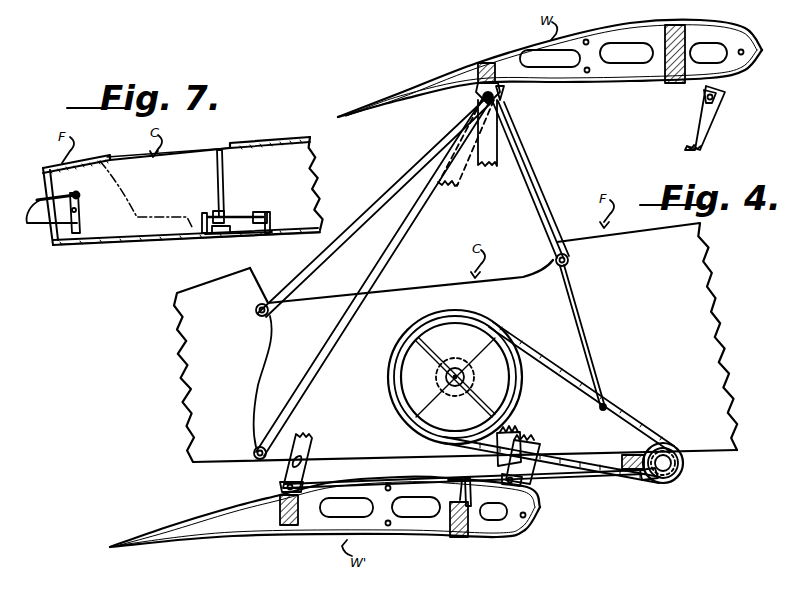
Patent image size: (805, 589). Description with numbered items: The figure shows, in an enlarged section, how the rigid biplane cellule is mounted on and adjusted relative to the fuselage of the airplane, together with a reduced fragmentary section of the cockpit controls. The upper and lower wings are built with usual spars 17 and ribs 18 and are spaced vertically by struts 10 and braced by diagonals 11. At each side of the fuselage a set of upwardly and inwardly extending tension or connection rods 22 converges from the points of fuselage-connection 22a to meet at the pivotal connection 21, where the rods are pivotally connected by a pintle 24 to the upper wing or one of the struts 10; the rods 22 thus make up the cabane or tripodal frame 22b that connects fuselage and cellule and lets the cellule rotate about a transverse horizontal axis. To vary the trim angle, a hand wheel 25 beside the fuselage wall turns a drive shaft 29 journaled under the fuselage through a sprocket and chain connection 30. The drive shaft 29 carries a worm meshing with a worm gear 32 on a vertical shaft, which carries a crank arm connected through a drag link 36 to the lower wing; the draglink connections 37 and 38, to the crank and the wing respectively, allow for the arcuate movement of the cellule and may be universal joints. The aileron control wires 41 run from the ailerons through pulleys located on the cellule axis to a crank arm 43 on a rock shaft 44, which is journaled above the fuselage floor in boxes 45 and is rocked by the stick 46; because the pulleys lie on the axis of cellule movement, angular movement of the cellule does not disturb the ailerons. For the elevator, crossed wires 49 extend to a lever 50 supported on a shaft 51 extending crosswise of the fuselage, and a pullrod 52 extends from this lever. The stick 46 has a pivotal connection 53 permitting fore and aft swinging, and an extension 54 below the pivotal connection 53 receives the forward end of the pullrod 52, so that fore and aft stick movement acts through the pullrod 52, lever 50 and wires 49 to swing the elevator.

In FIG. 4, the struts 10 is at (444, 185).
In FIG. 4, the diagonals 11 is at (484, 165).
In FIG. 4, the spars 17 is at (476, 66).
In FIG. 4, the ribs 18 is at (618, 82).
In FIG. 4, the pivotal connection 21 is at (506, 96).
In FIG. 4, the tension or connection rods 22 is at (387, 250).
In FIG. 4, the points of fuselage-connection 22a is at (260, 402).
In FIG. 4, the cabane or tripodal frame 22b is at (523, 139).
In FIG. 4, the pintle 24 is at (480, 101).
In FIG. 4, the hand wheel 25 is at (506, 324).
In FIG. 4, the drive shaft 29 is at (684, 476).
In FIG. 4, the sprocket and chain connection 30 is at (633, 422).
In FIG. 4, the worm gear 32 is at (634, 473).
In FIG. 4, the drag link 36 is at (579, 478).
In FIG. 4, the draglink connection 37 is at (646, 480).
In FIG. 4, the draglink connection 38 is at (469, 470).
In FIG. 4, the aileron control wires 41 is at (584, 342).
In FIG. 7, the crank arm 43 is at (248, 236).
In FIG. 7, the rock shaft 44 is at (243, 214).
In FIG. 7, the boxes 45 is at (206, 213).
In FIG. 7, the stick 46 is at (223, 172).
In FIG. 7, the crossed wires 49 is at (38, 196).
In FIG. 7, the lever 50 is at (77, 194).
In FIG. 7, the shaft 51 is at (80, 210).
In FIG. 7, the pullrod 52 is at (107, 242).
In FIG. 7, the pivotal connection 53 is at (224, 221).
In FIG. 7, the extension 54 is at (226, 236).